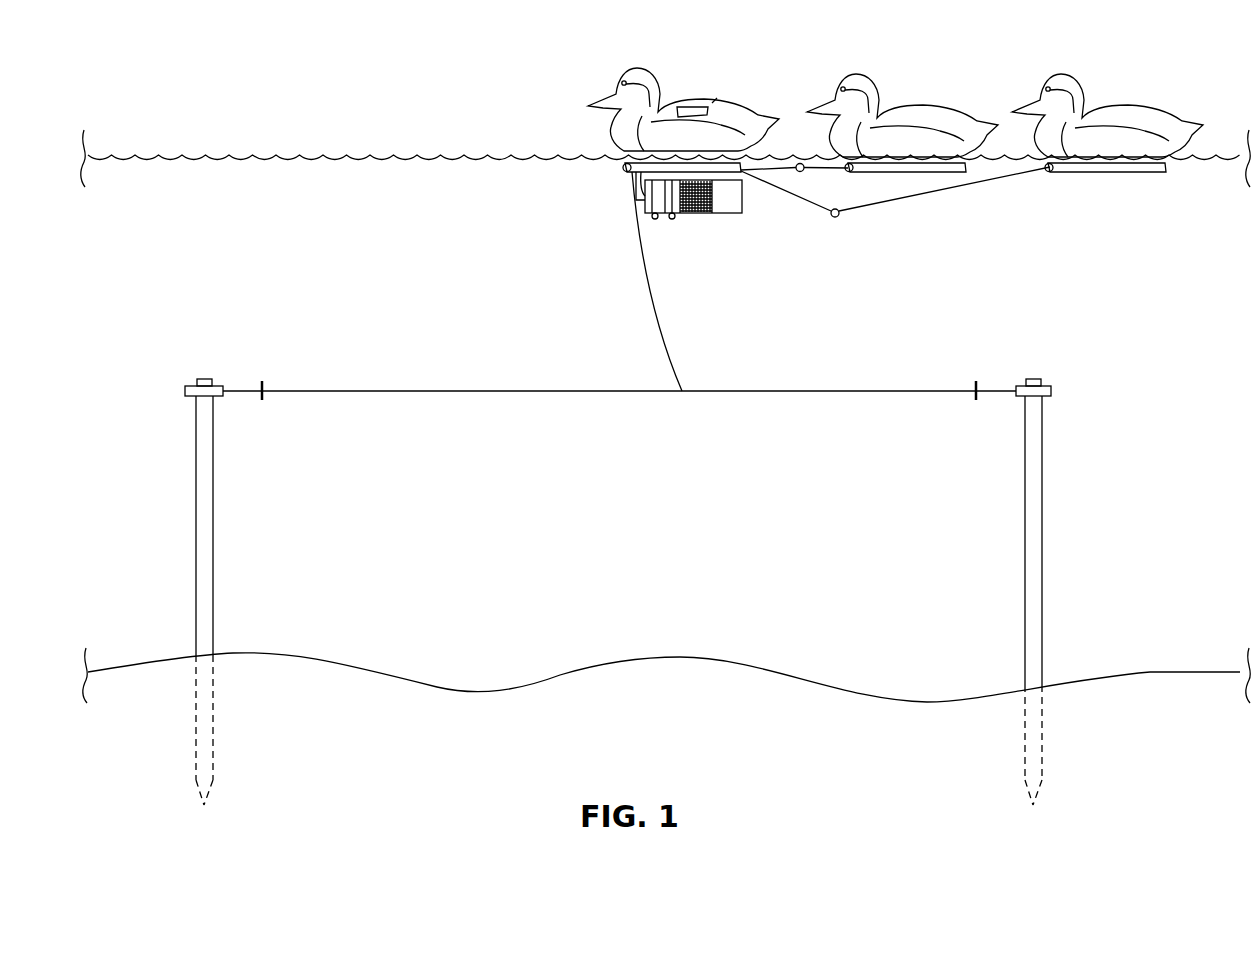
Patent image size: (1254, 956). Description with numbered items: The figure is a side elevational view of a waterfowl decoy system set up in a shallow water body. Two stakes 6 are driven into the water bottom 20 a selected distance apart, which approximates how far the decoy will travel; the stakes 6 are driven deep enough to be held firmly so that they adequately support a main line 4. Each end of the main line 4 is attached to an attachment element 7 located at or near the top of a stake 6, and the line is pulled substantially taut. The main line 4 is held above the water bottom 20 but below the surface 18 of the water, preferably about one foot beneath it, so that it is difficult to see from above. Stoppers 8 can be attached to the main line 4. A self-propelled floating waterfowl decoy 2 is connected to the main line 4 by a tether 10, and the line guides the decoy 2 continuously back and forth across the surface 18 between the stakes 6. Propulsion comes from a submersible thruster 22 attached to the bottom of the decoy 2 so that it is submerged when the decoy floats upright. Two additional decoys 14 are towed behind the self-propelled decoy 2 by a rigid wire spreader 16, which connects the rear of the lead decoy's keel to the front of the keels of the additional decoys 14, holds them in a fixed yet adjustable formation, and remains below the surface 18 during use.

The self-propelled floating waterfowl decoy 2 is at (685, 104).
The additional decoys 14 is at (915, 105).
The rigid wire spreader 16 is at (915, 198).
The surface of the water body 18 is at (343, 157).
The submersible thruster 22 is at (697, 215).
The tether 10 is at (650, 290).
The main line 4 is at (395, 390).
The attachment element 7 is at (185, 392).
The stoppers 8 is at (262, 401).
The stakes 6 is at (195, 510).
The water bottom 20 is at (437, 687).